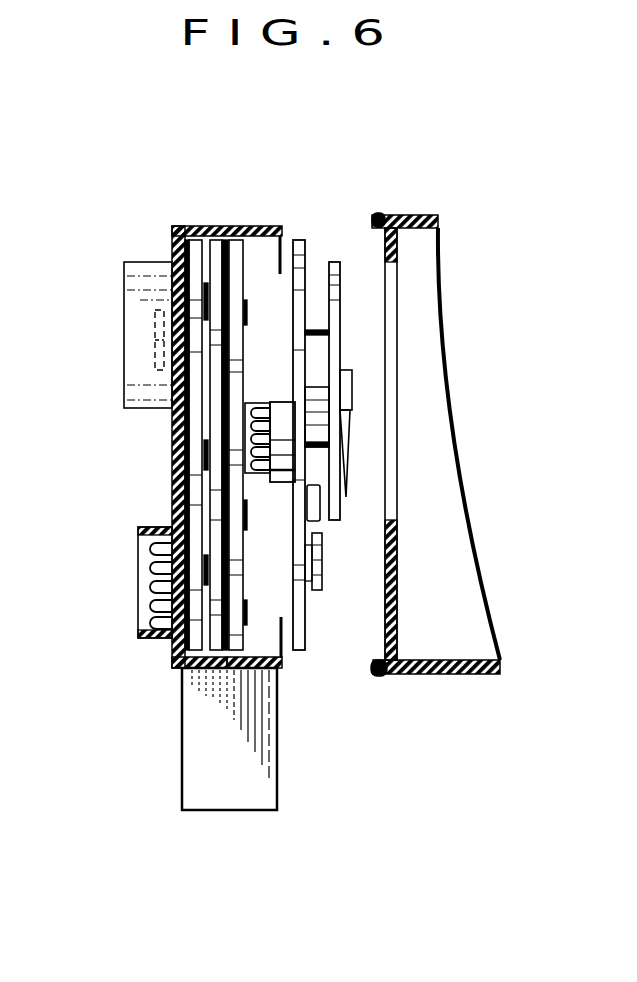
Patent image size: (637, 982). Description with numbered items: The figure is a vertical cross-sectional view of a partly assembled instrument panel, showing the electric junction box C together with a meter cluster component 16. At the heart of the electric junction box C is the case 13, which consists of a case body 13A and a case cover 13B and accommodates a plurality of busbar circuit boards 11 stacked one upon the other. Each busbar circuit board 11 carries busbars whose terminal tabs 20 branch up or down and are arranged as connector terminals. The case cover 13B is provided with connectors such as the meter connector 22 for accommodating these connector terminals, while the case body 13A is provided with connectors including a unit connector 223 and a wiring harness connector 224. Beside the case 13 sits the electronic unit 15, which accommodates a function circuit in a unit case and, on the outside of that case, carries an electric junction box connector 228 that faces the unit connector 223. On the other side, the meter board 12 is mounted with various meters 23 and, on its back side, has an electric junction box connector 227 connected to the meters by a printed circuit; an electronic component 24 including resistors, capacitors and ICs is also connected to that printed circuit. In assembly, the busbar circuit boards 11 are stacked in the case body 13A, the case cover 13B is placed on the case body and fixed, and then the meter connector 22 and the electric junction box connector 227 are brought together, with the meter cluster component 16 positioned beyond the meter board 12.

The electric junction box C is at (148, 214).
The busbar circuit board 11 is at (214, 238).
The meter board 12 is at (300, 240).
The case 13 is at (170, 777).
The case body 13A is at (174, 670).
The case cover 13B is at (261, 668).
The electronic unit 15 is at (130, 306).
The meter cluster component 16 is at (420, 215).
The terminal tabs 20 is at (156, 571).
The meter connector 22 is at (272, 465).
The unit connector 223 is at (158, 340).
The wiring harness connector 224 is at (140, 640).
The electric junction box connector 227 is at (287, 418).
The electric junction box connector 228 is at (104, 376).
The meters 23 is at (350, 262).
The electronic component 24 is at (322, 580).